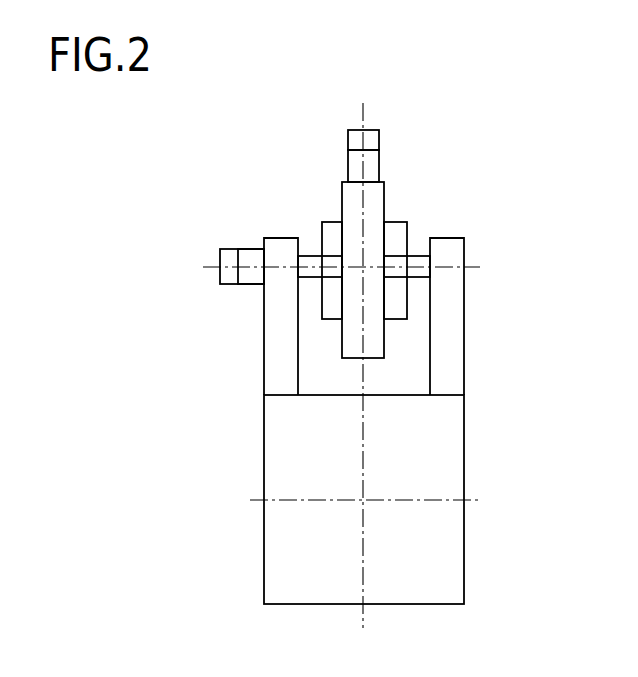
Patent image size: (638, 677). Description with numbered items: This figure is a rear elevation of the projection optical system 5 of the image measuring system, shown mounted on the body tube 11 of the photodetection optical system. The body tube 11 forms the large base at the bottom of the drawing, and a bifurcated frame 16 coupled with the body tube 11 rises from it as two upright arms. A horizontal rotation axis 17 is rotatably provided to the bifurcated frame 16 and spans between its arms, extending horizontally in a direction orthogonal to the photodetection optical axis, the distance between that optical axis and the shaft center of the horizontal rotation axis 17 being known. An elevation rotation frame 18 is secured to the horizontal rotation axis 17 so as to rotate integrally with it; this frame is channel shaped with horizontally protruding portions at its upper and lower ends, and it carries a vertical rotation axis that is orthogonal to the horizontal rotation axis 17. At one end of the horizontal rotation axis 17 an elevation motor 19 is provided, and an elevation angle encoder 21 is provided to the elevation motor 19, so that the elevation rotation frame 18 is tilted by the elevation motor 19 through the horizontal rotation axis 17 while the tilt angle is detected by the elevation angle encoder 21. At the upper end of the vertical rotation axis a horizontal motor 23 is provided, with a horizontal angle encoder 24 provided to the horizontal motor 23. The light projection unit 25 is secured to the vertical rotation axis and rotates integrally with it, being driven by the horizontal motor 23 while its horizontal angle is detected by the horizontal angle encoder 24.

The projection optical system 5 is at (361, 365).
The body tube 11 is at (464, 487).
The bifurcated frame 16 is at (464, 327).
The horizontal rotation axis 17 is at (420, 255).
The elevation rotation frame 18 is at (385, 213).
The elevation motor 19 is at (247, 285).
The elevation angle encoder 21 is at (235, 250).
The horizontal motor 23 is at (380, 167).
The horizontal angle encoder 24 is at (348, 145).
The light projection unit 25 is at (327, 220).